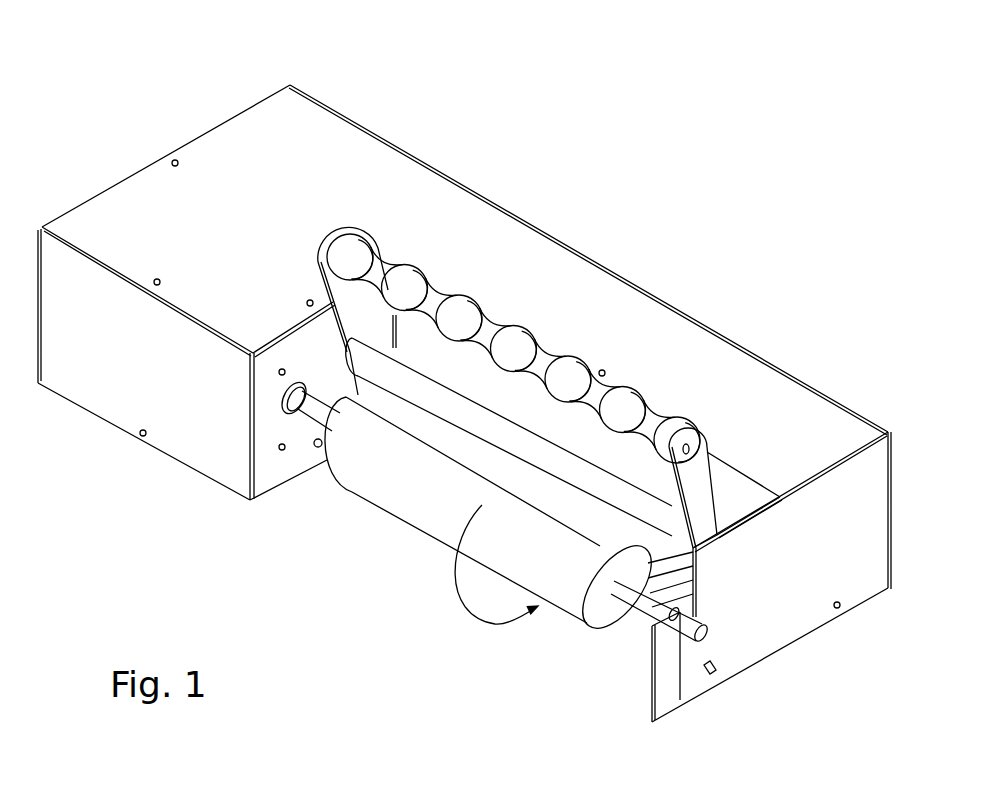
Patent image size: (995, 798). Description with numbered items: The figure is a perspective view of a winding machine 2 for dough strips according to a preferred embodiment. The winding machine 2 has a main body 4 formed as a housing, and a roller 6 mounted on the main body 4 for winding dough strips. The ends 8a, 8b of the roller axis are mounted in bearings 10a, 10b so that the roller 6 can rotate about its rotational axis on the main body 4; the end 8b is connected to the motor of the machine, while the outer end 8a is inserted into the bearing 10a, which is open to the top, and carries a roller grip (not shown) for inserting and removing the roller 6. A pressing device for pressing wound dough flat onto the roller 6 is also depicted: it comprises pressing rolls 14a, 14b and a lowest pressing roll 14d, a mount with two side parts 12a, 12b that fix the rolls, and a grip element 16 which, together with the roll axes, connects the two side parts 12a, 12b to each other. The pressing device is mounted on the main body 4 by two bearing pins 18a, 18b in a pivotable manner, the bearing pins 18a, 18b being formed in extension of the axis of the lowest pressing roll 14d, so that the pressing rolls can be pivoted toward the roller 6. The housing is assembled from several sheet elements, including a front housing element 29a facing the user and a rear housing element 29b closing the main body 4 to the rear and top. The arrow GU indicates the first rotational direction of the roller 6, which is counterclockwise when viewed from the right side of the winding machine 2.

The winding machine 2 is at (729, 78).
The main body 4 is at (346, 140).
The roller 6 is at (437, 512).
The end of the roller axis 8a is at (643, 600).
The end of the roller axis 8b is at (325, 415).
The bearing 10a is at (681, 630).
The bearing 10b is at (293, 407).
The side part 12a is at (688, 460).
The side part 12b is at (345, 297).
The pressing roll 14a is at (487, 423).
The pressing roll 14b is at (680, 565).
The lowest pressing roll 14d is at (643, 637).
The grip element 16 is at (455, 305).
The bearing pin 18a is at (717, 675).
The bearing pin 18b is at (315, 442).
The front housing element 29a is at (178, 428).
The rear housing element 29b is at (795, 412).
The first rotational direction GU is at (472, 615).